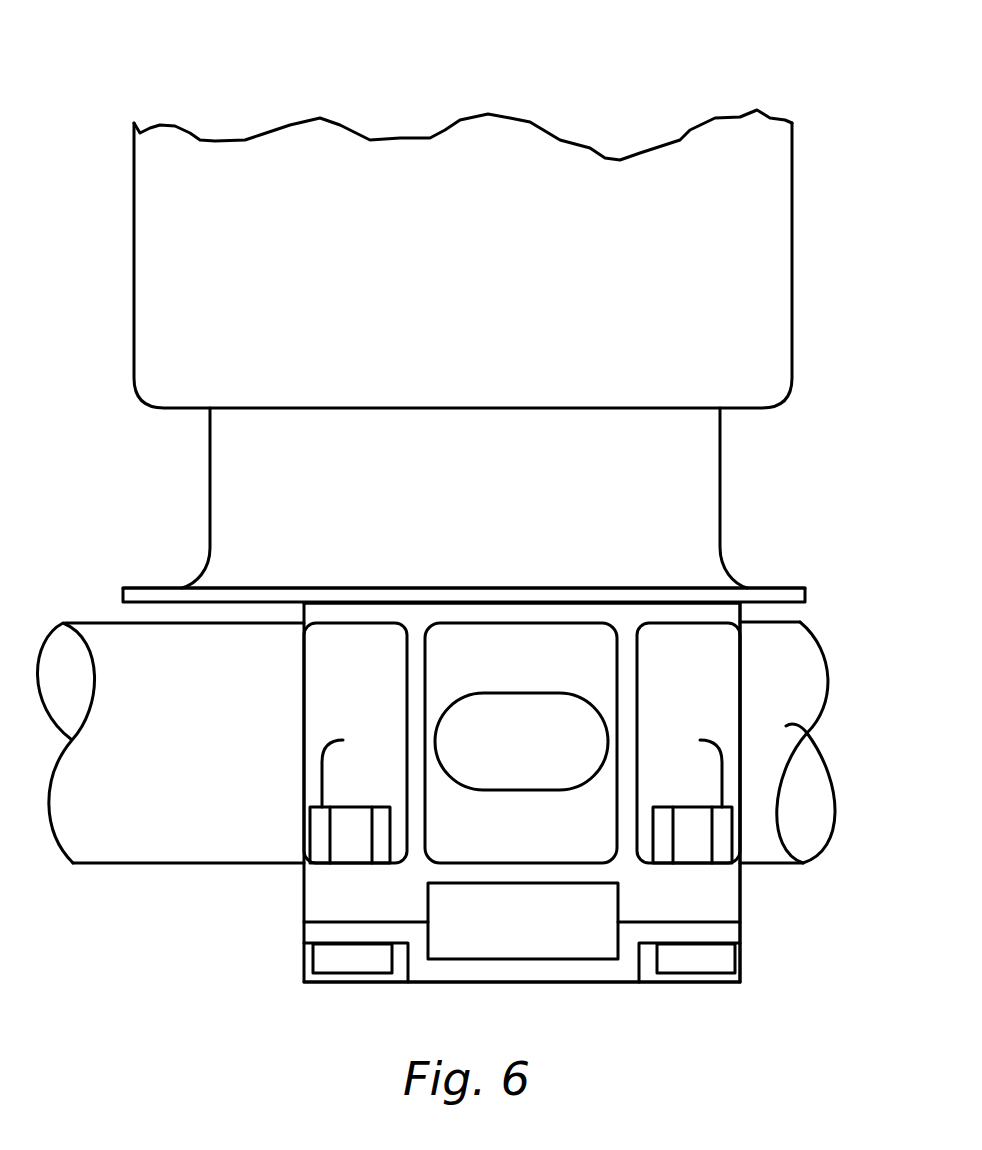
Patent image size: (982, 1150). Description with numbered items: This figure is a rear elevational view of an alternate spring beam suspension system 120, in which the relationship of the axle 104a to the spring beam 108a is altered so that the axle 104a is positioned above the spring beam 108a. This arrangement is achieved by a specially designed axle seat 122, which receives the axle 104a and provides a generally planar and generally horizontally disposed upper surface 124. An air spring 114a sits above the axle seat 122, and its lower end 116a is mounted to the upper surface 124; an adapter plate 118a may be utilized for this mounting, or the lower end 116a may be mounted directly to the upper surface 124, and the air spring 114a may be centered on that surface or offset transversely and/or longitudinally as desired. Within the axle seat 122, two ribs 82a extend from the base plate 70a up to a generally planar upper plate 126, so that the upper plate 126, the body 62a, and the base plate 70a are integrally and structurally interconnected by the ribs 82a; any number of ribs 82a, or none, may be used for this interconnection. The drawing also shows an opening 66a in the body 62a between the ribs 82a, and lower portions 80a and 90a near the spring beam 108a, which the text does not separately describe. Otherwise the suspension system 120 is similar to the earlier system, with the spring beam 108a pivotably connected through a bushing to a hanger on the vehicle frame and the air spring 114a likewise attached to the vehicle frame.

The suspension system 120 is at (132, 80).
The air spring 114a is at (133, 247).
The lower end 116a is at (723, 473).
The adapter plate 118a is at (806, 597).
The upper surface 124 is at (527, 588).
The upper plate 126 is at (746, 606).
The axle seat 122 is at (742, 727).
The body 62a is at (303, 762).
The ribs 82a is at (407, 698).
The oval opening 66a is at (527, 790).
The axle 104a is at (173, 863).
The base plate 70a is at (742, 902).
The contact housing 80a is at (742, 957).
The contact 90a is at (309, 957).
The spring beam 108a is at (572, 959).